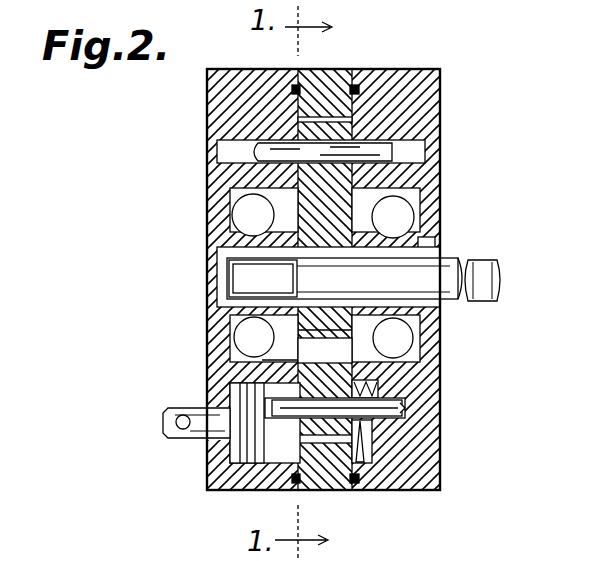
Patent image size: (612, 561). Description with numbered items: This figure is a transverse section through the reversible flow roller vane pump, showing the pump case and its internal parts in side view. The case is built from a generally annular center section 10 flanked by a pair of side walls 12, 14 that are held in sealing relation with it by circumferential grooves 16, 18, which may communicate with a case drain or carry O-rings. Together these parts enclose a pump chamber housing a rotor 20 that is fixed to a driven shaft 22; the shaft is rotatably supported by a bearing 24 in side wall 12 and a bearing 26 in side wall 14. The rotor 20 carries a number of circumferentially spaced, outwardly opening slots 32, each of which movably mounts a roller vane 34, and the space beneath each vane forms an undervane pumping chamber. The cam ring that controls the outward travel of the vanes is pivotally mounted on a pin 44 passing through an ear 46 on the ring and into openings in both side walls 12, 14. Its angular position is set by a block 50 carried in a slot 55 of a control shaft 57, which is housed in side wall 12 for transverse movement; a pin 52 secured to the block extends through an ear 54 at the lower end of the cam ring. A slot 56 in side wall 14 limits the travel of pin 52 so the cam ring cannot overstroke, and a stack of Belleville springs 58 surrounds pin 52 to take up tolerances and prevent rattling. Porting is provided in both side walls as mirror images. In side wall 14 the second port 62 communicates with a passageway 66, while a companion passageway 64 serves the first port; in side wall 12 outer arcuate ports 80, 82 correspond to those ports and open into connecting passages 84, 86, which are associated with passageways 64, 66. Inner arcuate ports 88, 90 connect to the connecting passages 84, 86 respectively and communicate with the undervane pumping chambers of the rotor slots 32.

The center section 10 is at (318, 78).
The side wall 12 is at (222, 103).
The side wall 14 is at (432, 88).
The circumferential groove 16 is at (294, 84).
The circumferential groove 18 is at (355, 84).
The rotor 20 is at (405, 212).
The driven shaft 22 is at (462, 262).
The bearing 24 is at (218, 298).
The bearing 26 is at (425, 305).
The slot 32 is at (344, 288).
The roller vane 34 is at (340, 352).
The pin 44 is at (405, 152).
The ear 46 is at (366, 128).
The block 50 is at (245, 440).
The pin 52 is at (383, 407).
The ear 54 is at (364, 470).
The slot 55 is at (272, 462).
The slot 56 is at (404, 412).
The control shaft 57 is at (182, 430).
The Belleville spring 58 is at (370, 440).
The second port 62 is at (415, 186).
The passageway 64 is at (425, 245).
The passageway 66 is at (410, 340).
The outer arcuate port 80 is at (262, 190).
The outer arcuate port 82 is at (260, 357).
The connecting passage 84 is at (245, 213).
The connecting passage 86 is at (245, 336).
The inner arcuate port 88 is at (262, 230).
The inner arcuate port 90 is at (292, 318).